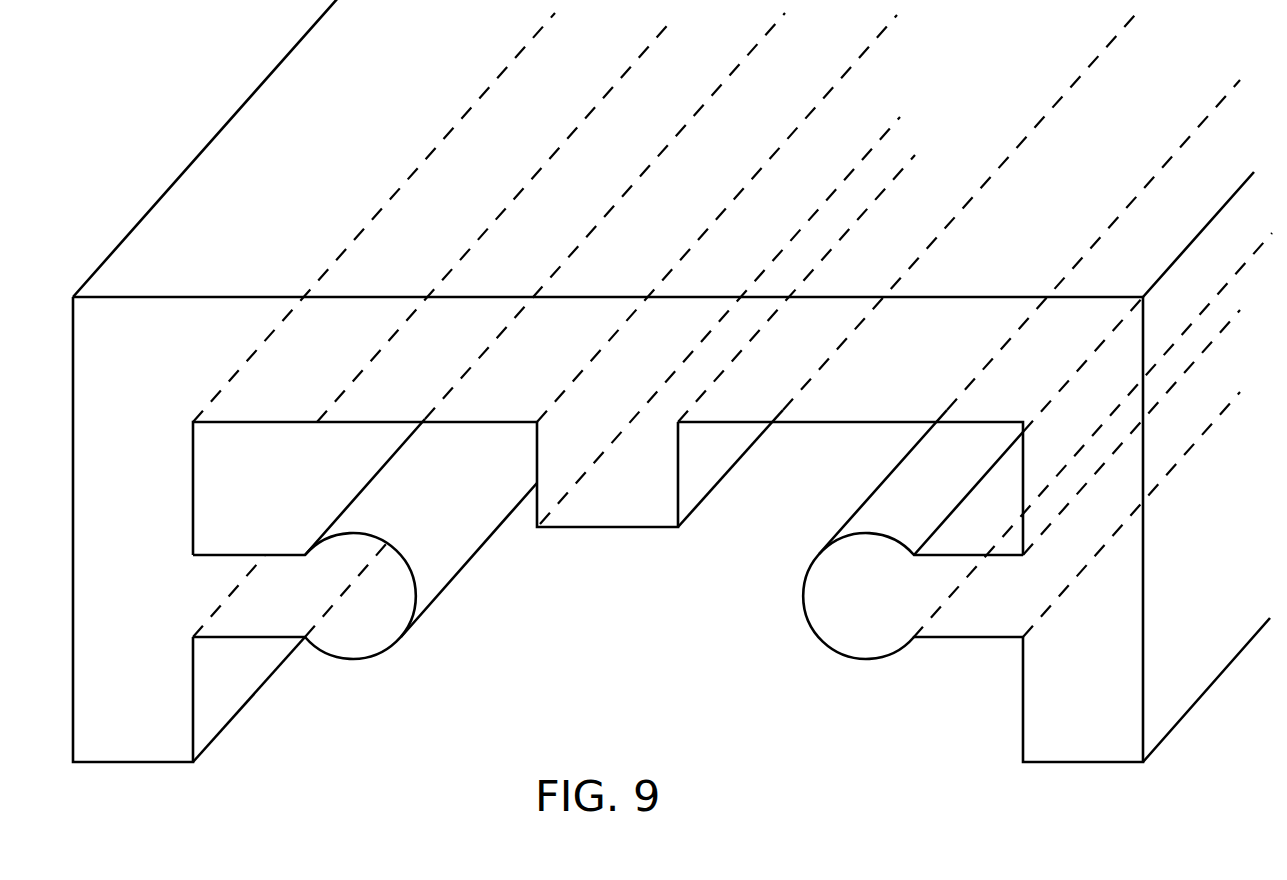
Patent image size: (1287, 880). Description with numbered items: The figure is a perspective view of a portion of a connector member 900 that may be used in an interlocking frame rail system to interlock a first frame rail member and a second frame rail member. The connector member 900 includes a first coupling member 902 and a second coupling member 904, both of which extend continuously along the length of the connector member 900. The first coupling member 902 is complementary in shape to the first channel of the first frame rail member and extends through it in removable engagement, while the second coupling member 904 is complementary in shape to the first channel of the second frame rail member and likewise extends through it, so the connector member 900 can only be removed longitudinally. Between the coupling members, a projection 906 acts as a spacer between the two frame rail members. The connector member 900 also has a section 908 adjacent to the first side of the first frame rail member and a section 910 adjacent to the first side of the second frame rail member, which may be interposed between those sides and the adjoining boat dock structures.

The connector member 900 is at (122, 156).
The first coupling member 902 is at (355, 658).
The second coupling member 904 is at (863, 658).
The projection 906 is at (603, 528).
The section 908 is at (191, 275).
The section 910 is at (1117, 262).